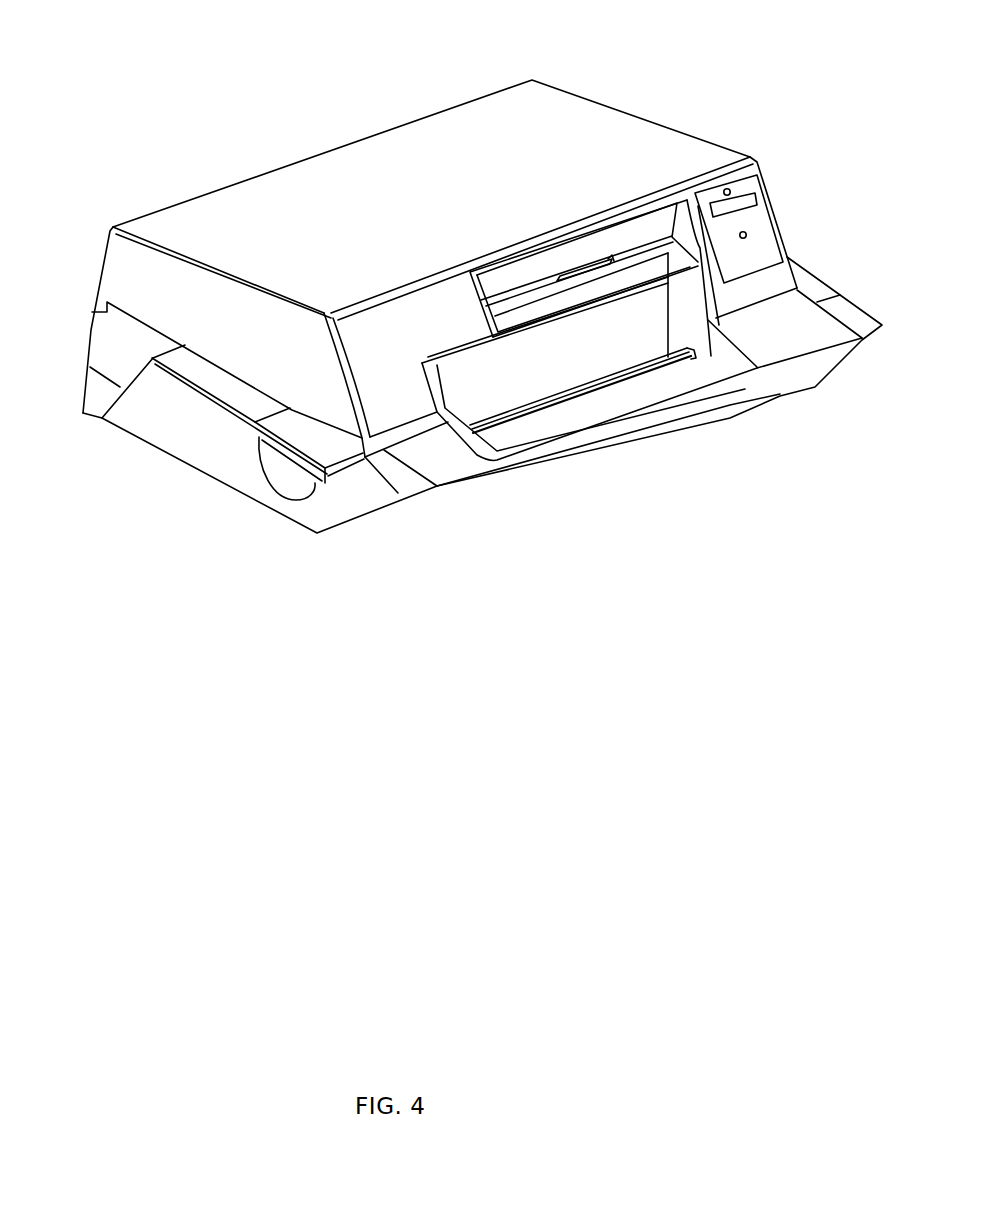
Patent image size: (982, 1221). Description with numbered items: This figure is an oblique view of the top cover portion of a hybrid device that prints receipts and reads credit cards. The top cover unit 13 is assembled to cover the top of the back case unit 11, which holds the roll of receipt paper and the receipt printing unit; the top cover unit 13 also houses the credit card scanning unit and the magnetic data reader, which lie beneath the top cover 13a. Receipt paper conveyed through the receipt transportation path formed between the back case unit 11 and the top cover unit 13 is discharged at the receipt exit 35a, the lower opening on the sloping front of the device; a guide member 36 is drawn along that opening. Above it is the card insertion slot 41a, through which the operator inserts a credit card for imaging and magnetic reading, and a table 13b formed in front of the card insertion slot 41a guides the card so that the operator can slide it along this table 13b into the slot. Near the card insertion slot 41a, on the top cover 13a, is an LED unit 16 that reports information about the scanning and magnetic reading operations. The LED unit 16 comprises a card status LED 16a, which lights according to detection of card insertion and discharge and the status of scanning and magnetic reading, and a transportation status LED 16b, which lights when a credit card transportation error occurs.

The back case unit 11 is at (128, 274).
The top cover unit 13 is at (225, 205).
The top cover 13a is at (527, 95).
The table 13b is at (525, 318).
The LED unit 16 is at (708, 199).
The card status LED 16a is at (731, 192).
The transportation status LED 16b is at (747, 235).
The receipt exit 35a is at (493, 410).
The discharge guide rail 36 is at (587, 398).
The card insertion slot 41a is at (590, 257).